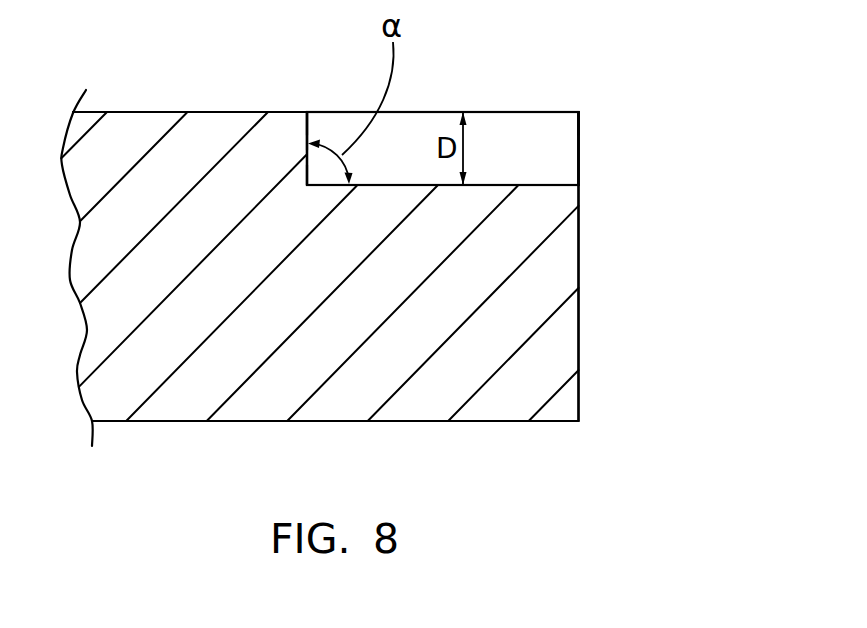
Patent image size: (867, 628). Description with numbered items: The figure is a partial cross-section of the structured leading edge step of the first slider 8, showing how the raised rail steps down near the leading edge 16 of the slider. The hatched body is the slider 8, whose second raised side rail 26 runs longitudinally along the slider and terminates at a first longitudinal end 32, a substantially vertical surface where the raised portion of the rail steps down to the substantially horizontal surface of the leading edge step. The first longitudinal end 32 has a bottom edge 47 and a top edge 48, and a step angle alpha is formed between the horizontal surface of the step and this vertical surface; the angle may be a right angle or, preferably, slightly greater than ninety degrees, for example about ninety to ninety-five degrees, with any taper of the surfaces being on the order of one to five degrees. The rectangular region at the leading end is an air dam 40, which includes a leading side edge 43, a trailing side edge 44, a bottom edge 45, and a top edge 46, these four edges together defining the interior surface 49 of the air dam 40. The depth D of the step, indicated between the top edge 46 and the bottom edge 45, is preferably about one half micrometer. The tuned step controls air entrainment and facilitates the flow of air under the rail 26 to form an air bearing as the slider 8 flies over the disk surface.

The first slider 8 is at (507, 318).
The leading edge 16 is at (578, 232).
The second raised side rail 26 is at (202, 162).
The first longitudinal end 32 is at (305, 153).
The air dam 40 is at (495, 140).
The leading side edge 43 is at (580, 127).
The trailing side edge 44 is at (308, 130).
The bottom edge 45 is at (392, 187).
The top edge 46 is at (427, 108).
The bottom edge 47 is at (306, 186).
The top edge 48 is at (306, 108).
The interior surface 49 is at (533, 158).